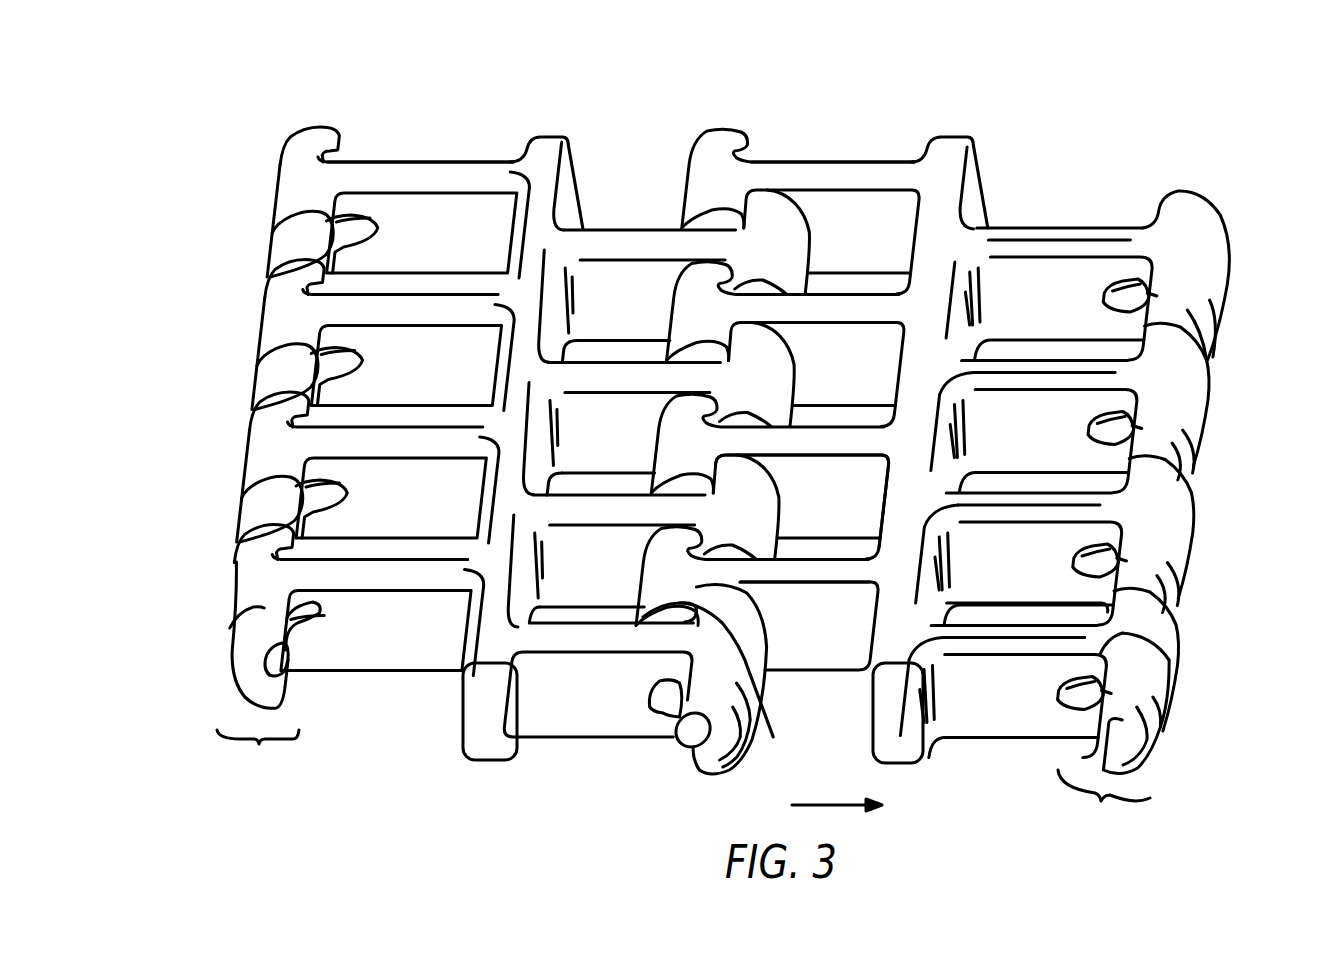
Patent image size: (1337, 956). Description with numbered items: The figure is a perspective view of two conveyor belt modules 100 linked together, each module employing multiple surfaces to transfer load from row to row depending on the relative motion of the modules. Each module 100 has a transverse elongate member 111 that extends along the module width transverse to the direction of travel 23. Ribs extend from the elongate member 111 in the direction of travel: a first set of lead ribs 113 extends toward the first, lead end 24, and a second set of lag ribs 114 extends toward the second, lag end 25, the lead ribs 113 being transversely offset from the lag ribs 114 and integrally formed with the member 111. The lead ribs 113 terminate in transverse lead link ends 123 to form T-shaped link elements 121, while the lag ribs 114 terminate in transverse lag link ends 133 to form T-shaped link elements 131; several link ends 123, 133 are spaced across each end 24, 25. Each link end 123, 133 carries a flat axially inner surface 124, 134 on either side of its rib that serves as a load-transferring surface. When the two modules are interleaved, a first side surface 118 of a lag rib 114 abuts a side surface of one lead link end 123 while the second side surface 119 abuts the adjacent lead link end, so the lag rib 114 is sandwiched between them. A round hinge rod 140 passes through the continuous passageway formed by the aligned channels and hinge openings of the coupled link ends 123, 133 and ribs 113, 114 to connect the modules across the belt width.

The conveyor belt module 100 is at (822, 96).
The second (lag) end 25 is at (282, 150).
The first (lead) end 24 is at (1220, 186).
The transverse elongate member 111 is at (548, 133).
The lead ribs 113 is at (593, 373).
The lag ribs 114 is at (355, 308).
The first side surface of lag rib 118 is at (806, 545).
The second side surface of lag rib 119 is at (836, 503).
The T-shaped link element 121 is at (1104, 797).
The lead link end 123 is at (1200, 292).
The axially inner surface of lead link end 124 is at (647, 567).
The T-shaped link element 131 is at (258, 754).
The lag link end 133 is at (250, 582).
The axially inner surface of lag link end 134 is at (752, 702).
The hinge rod 140 is at (688, 745).
The direction of travel 23 is at (820, 805).